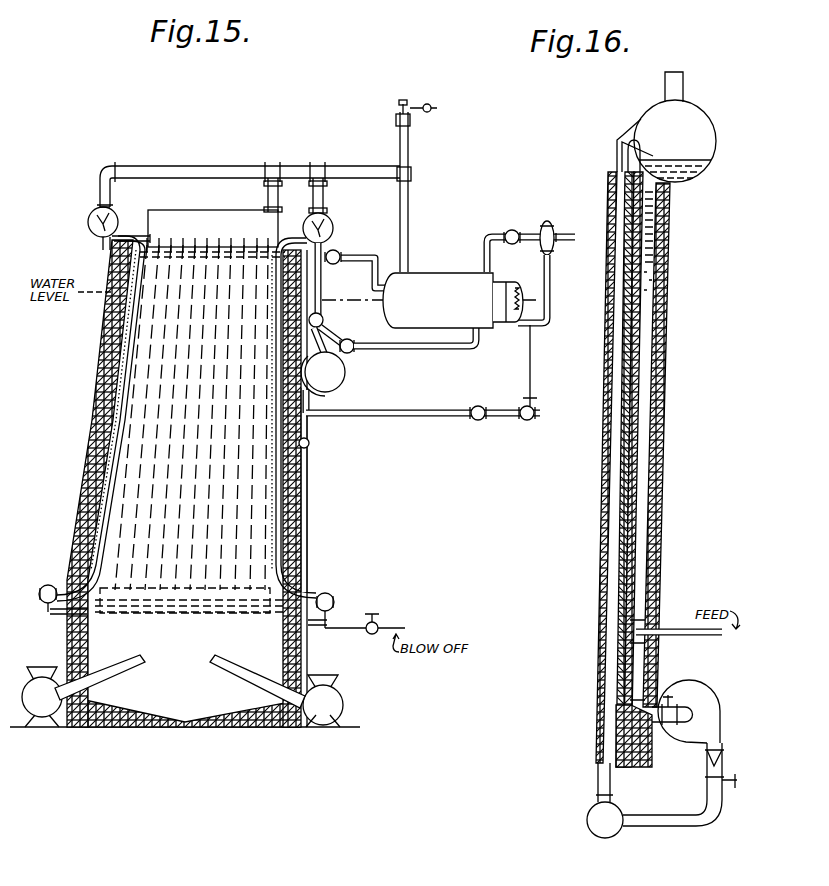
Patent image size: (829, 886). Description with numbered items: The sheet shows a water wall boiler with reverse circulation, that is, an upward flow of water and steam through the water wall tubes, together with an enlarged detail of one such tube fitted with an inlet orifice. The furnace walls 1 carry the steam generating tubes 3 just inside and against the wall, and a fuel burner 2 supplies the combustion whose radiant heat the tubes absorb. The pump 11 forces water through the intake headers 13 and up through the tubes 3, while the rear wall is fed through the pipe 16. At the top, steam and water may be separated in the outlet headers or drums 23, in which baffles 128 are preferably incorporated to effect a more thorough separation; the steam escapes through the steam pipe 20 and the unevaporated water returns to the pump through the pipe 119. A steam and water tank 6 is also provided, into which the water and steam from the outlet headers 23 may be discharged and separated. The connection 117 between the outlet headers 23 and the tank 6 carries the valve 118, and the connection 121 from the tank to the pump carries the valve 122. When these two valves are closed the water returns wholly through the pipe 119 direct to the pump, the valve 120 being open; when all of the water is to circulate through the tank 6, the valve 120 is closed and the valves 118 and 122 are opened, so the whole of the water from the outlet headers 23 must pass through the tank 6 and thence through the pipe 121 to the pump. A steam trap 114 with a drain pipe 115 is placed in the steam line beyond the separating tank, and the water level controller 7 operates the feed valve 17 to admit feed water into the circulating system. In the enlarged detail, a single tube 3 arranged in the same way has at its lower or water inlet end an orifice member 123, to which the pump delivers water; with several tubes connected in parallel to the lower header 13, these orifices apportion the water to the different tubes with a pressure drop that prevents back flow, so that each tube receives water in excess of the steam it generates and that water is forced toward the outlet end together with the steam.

In FIG. 15, the furnace walls 1 is at (88, 485).
In FIG. 15, the fuel burner 2 is at (118, 671).
In FIG. 15, the steam generating tubes 3 is at (105, 514).
In FIG. 16, the steam generating tubes 3 is at (610, 350).
In FIG. 15, the steam and water tank 6 is at (431, 273).
In FIG. 15, the water level controller 7 is at (522, 304).
In FIG. 15, the pump 11 is at (345, 378).
In FIG. 16, the pump 11 is at (702, 696).
In FIG. 15, the intake header 13 is at (50, 586).
In FIG. 16, the intake header 13 is at (604, 838).
In FIG. 15, the pipe 16 is at (298, 530).
In FIG. 15, the valve 17 is at (532, 409).
In FIG. 15, the steam pipe 20 is at (186, 166).
In FIG. 16, the steam pipe 20 is at (686, 91).
In FIG. 15, the outlet headers or drums 23 is at (88, 222).
In FIG. 16, the outlet headers or drums 23 is at (716, 138).
In FIG. 15, the steam trap 114 is at (541, 223).
In FIG. 15, the drain pipe 115 is at (551, 270).
In FIG. 15, the connection 117 is at (350, 256).
In FIG. 15, the valve 118 is at (337, 250).
In FIG. 15, the pipe 119 is at (322, 305).
In FIG. 16, the pipe 119 is at (648, 468).
In FIG. 15, the valve 120 is at (325, 323).
In FIG. 15, the connection 121 is at (394, 349).
In FIG. 15, the valve 122 is at (341, 343).
In FIG. 16, the orifice member 123 is at (595, 814).
In FIG. 15, the baffles 128 is at (113, 212).
In FIG. 16, the baffles 128 is at (617, 138).